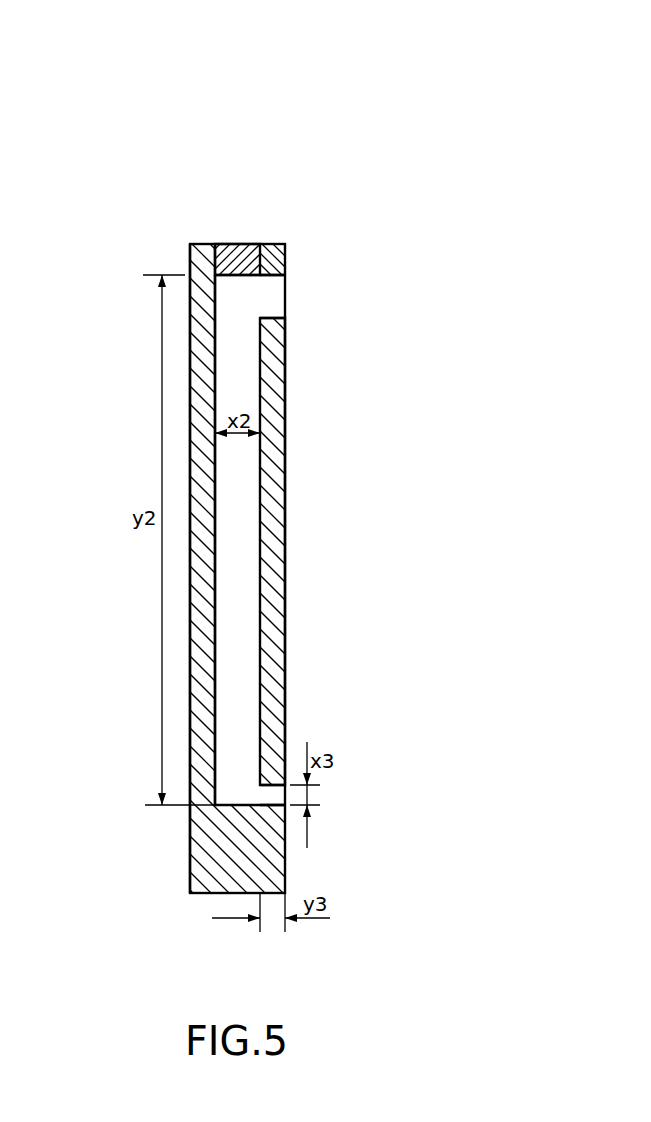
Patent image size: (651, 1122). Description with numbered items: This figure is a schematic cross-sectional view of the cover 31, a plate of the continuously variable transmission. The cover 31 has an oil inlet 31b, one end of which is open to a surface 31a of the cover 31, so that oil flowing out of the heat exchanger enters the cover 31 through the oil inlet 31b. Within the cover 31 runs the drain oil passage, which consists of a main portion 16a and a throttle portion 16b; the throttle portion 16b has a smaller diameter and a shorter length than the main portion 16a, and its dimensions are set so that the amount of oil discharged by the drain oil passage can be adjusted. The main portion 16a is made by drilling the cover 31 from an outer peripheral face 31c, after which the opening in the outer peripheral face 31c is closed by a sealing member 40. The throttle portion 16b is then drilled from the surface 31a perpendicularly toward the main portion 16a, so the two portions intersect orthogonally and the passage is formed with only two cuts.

The cover 31 is at (325, 454).
The surface 31a is at (285, 530).
The oil inlet 31b is at (273, 300).
The outer peripheral face 31c is at (222, 265).
The main portion 16a is at (243, 360).
The throttle portion 16b is at (273, 793).
The sealing member 40 is at (191, 244).